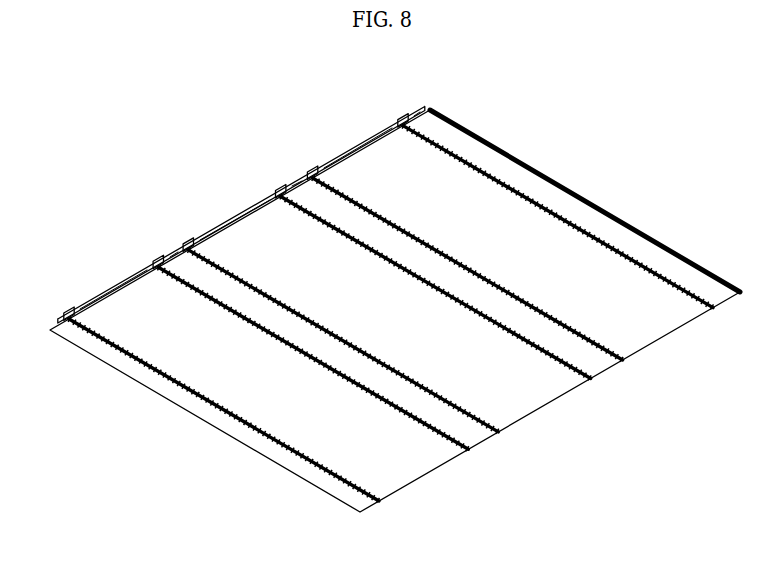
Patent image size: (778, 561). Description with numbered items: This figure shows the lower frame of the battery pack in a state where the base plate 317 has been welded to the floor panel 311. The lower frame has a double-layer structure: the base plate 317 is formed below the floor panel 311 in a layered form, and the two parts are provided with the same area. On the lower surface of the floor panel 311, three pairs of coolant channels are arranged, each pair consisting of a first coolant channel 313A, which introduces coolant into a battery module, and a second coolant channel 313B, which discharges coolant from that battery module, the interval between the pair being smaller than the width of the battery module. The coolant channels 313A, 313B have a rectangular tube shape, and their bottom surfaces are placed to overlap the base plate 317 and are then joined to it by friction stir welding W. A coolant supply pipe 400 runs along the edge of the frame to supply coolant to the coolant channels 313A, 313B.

The floor panel 311 is at (431, 109).
The base plate 317 is at (440, 127).
The coolant supply pipe 400 is at (110, 280).
The first coolant channel 313A is at (67, 316).
The second coolant channel 313B is at (158, 265).
The friction stir welding W is at (377, 500).